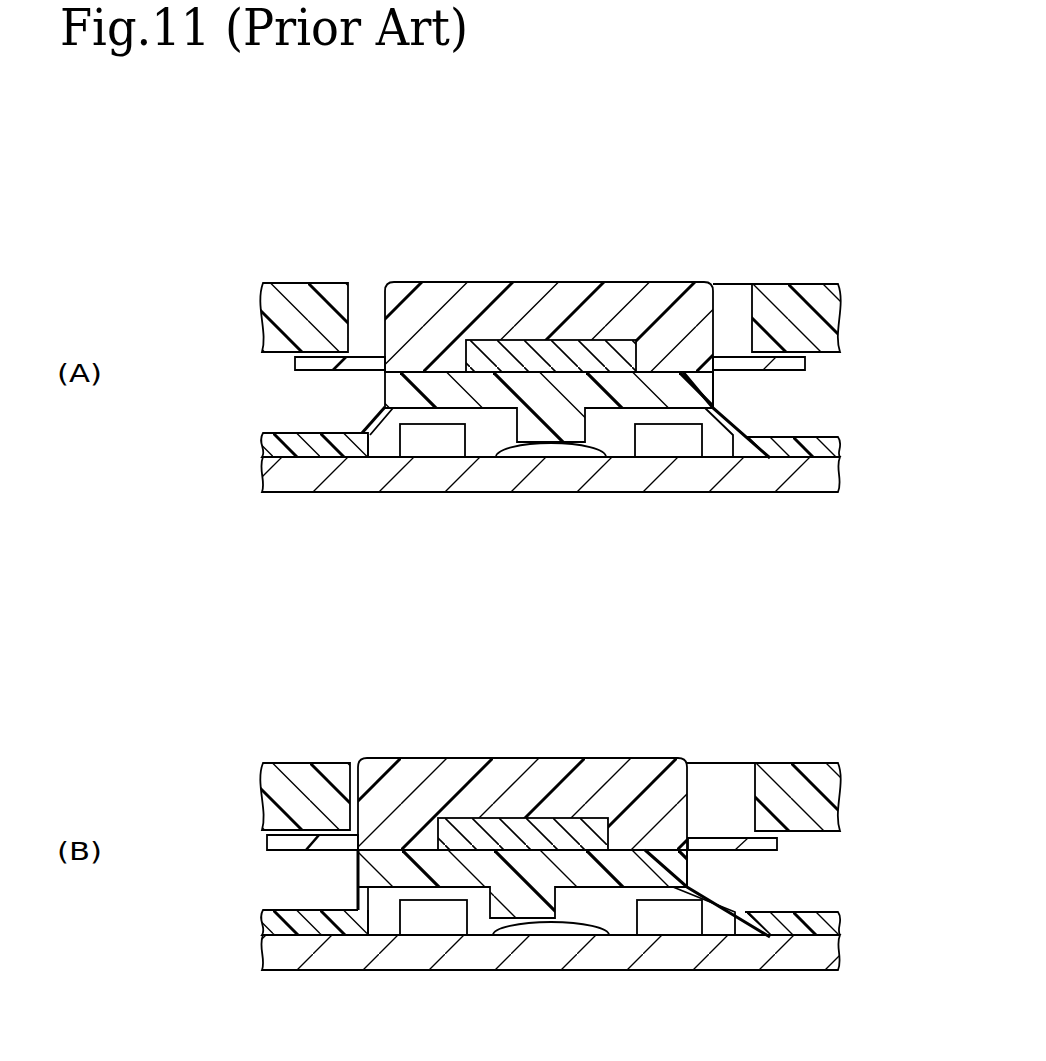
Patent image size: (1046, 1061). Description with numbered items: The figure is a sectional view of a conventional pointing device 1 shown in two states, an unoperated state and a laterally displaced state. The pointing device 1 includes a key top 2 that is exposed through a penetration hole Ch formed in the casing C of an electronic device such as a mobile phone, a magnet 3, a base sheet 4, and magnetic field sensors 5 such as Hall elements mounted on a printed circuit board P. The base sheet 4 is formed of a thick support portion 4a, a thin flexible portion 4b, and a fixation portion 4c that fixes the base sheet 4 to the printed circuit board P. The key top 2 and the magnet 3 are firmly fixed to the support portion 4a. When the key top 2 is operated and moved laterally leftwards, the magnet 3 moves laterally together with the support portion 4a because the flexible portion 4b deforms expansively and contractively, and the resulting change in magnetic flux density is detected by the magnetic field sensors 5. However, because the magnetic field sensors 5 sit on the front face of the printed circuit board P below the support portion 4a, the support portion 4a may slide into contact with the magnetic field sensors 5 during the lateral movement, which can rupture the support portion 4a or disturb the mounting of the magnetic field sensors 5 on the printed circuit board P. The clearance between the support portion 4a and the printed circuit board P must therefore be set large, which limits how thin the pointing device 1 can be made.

The pointing device 1 is at (539, 603).
The key top 2 is at (587, 282).
The magnet 3 is at (488, 342).
The base sheet 4 is at (834, 420).
The support portion 4a is at (715, 393).
The flexible portion 4b is at (372, 424).
The fixation portion 4c is at (290, 433).
The magnetic field sensors 5 is at (398, 447).
The casing C is at (808, 284).
The penetration hole Ch is at (350, 315).
The printed circuit board P is at (806, 492).